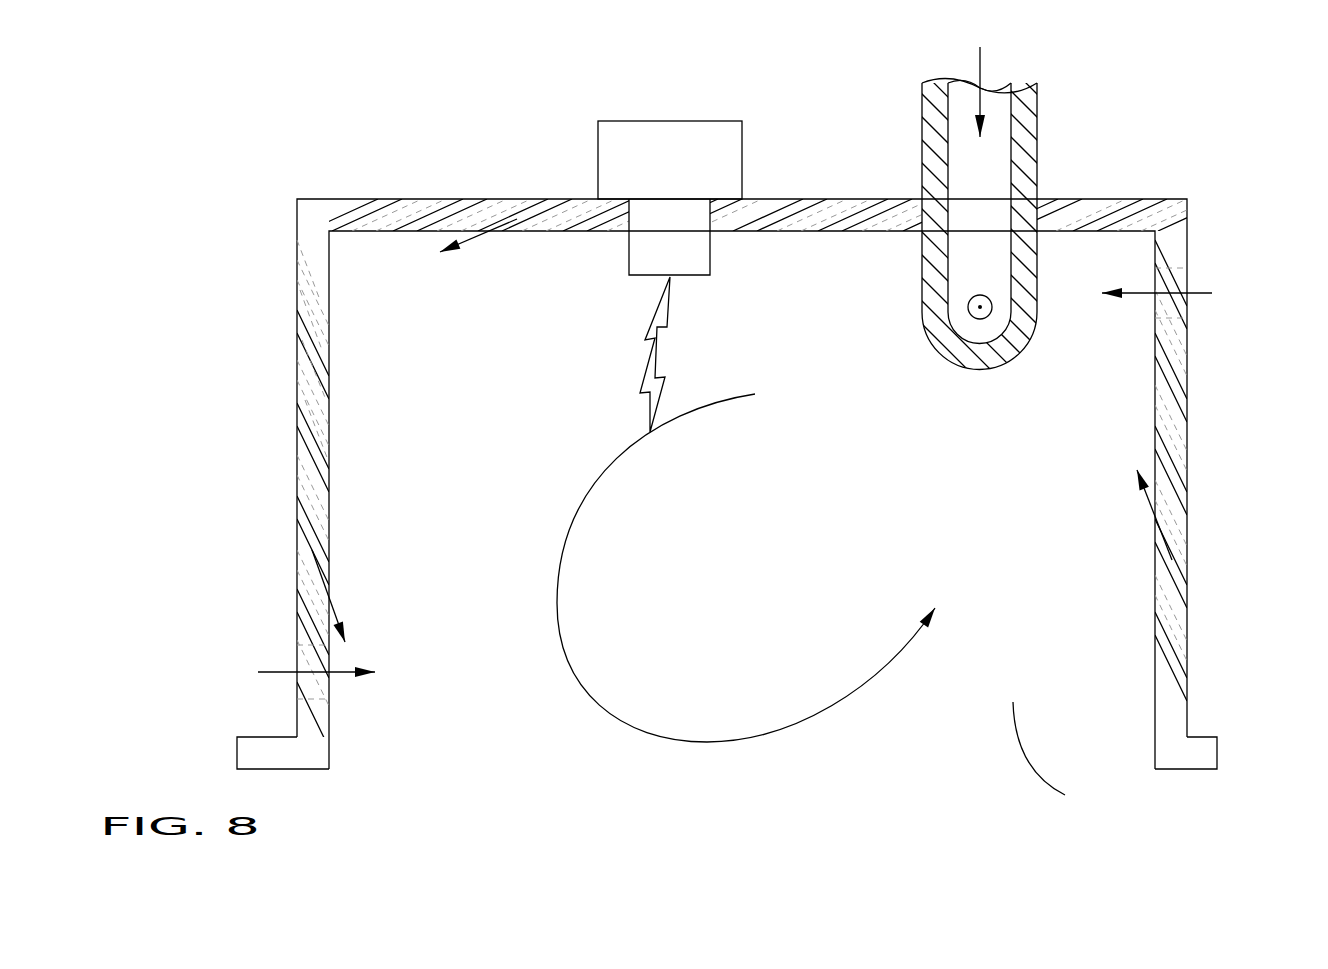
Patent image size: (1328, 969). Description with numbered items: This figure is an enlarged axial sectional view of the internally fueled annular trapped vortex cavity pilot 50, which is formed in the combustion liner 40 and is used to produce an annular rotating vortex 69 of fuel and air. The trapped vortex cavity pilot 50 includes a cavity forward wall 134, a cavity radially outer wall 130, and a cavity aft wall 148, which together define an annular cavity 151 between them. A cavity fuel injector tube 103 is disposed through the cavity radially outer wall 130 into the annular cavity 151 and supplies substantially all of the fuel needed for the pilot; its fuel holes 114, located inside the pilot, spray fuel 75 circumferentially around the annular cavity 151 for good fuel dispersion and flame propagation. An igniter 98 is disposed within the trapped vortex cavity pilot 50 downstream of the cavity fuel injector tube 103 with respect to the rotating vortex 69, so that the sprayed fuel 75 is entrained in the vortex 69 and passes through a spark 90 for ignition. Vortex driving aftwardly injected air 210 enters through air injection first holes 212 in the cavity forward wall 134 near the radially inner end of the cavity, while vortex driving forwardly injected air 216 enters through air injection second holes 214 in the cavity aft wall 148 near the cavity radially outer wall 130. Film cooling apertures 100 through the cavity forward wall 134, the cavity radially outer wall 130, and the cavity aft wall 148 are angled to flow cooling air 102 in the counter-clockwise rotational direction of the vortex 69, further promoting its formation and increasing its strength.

The combustion liner 40 is at (1202, 737).
The trapped vortex cavity pilot 50 is at (752, 452).
The annular rotating vortex 69 is at (863, 688).
The fuel 75 is at (982, 58).
The spark 90 is at (662, 353).
The igniter 98 is at (694, 121).
The film cooling apertures 100 is at (312, 462).
The cooling air 102 is at (478, 236).
The cavity fuel injector tubes 103 is at (1038, 137).
The fuel holes 114 is at (989, 298).
The cavity radially outer wall 130 is at (457, 199).
The cavity forward wall 134 is at (297, 395).
The cavity aft wall 148 is at (1187, 568).
The annular cavity 151 is at (1064, 755).
The aftwardly injected air 210 is at (277, 676).
The air injection first holes 212 is at (297, 651).
The air injection second holes 214 is at (1182, 283).
The forwardly injected air 216 is at (1200, 296).